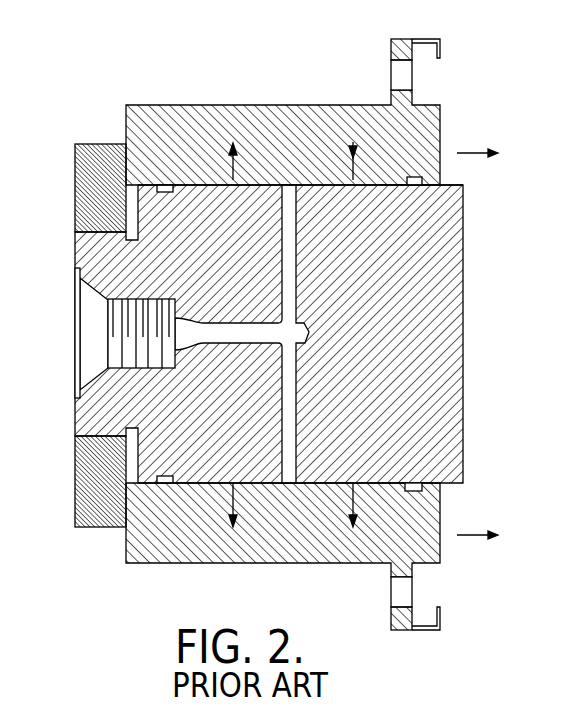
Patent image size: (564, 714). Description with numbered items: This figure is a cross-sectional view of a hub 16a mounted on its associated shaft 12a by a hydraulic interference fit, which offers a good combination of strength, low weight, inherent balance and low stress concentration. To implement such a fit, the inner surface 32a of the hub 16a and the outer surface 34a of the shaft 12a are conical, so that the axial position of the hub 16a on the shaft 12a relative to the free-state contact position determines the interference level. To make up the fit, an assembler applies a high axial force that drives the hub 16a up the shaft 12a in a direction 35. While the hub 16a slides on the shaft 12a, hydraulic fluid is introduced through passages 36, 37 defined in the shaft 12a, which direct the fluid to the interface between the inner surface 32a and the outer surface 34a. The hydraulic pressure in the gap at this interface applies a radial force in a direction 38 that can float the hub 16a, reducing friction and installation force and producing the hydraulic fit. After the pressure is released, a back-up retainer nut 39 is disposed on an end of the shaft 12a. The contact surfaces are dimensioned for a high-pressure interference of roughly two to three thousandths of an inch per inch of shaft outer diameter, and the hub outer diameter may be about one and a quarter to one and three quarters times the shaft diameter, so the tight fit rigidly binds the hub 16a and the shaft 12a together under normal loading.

The shaft 12a is at (462, 343).
The hub 16a is at (441, 128).
The inner surface 32a is at (383, 190).
The outer surface 34a is at (205, 178).
The direction 35 is at (470, 153).
The passage 36 is at (198, 338).
The passage 37 is at (287, 262).
The direction 38 is at (236, 170).
The back-up retainer nut 39 is at (75, 189).